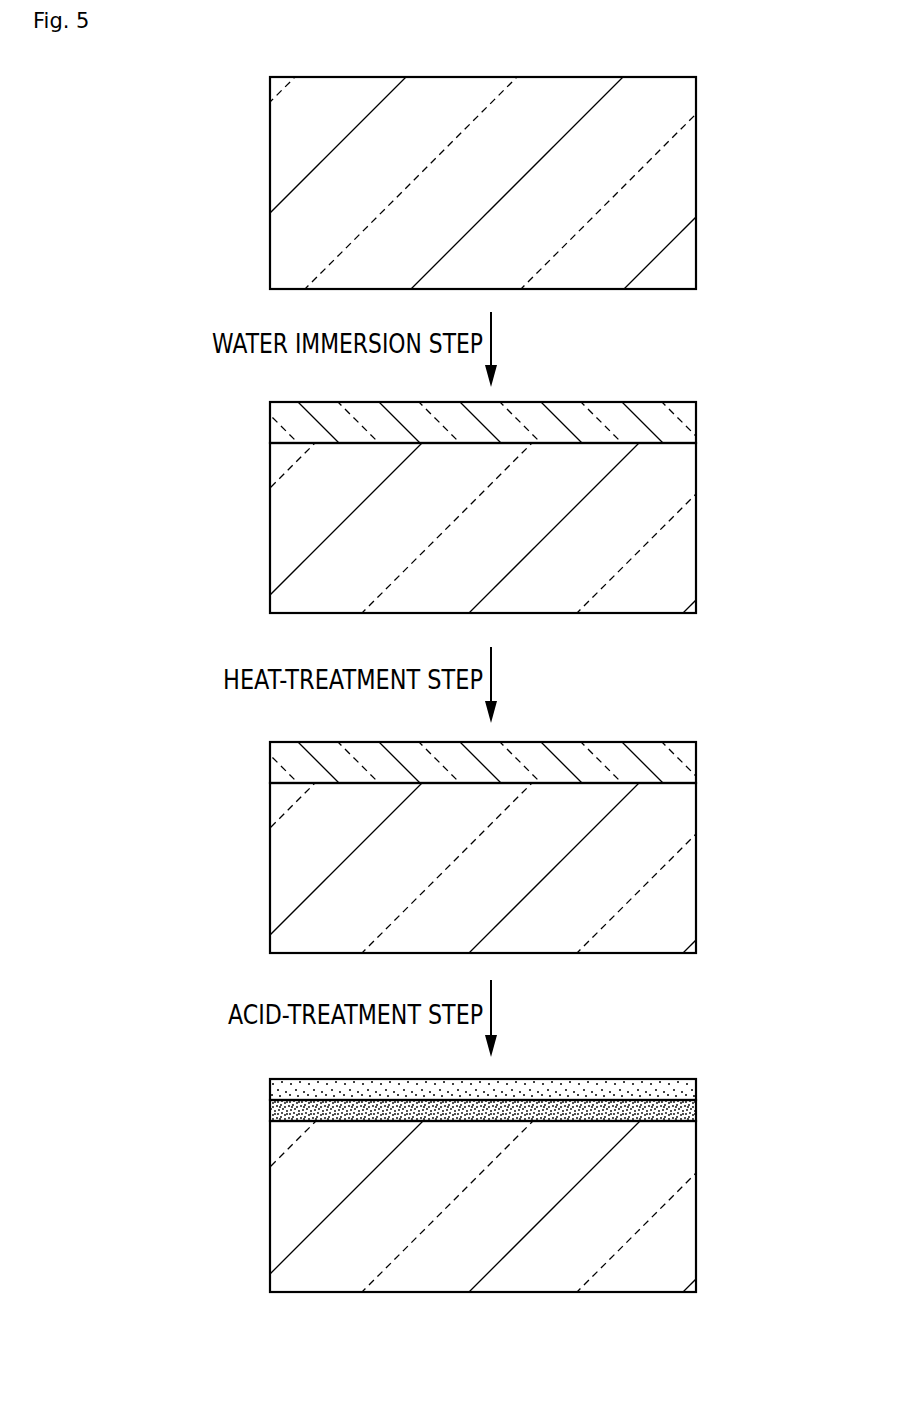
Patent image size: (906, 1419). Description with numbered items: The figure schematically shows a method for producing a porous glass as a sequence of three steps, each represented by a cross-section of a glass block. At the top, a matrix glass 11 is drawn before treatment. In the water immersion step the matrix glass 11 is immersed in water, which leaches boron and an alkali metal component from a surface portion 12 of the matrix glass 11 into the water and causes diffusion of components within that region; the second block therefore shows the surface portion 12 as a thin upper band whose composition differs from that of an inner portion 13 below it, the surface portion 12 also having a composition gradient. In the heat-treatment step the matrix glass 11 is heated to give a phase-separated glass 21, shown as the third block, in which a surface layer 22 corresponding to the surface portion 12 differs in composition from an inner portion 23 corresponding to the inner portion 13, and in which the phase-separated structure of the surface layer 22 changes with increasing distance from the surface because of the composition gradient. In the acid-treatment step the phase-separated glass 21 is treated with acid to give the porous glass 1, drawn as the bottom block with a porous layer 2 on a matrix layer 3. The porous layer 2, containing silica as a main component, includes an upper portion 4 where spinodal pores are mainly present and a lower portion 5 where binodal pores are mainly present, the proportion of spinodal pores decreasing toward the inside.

The matrix glass 11 is at (736, 108).
The surface portion 12 is at (696, 421).
The inner portion 13 is at (696, 528).
The phase-separated glass 21 is at (499, 827).
The surface layer 22 is at (696, 760).
The inner portion 23 is at (696, 867).
The porous glass 1 is at (499, 1159).
The porous layer 2 is at (532, 1097).
The matrix layer 3 is at (696, 1205).
The upper portion 4 is at (696, 1092).
The lower portion 5 is at (696, 1115).